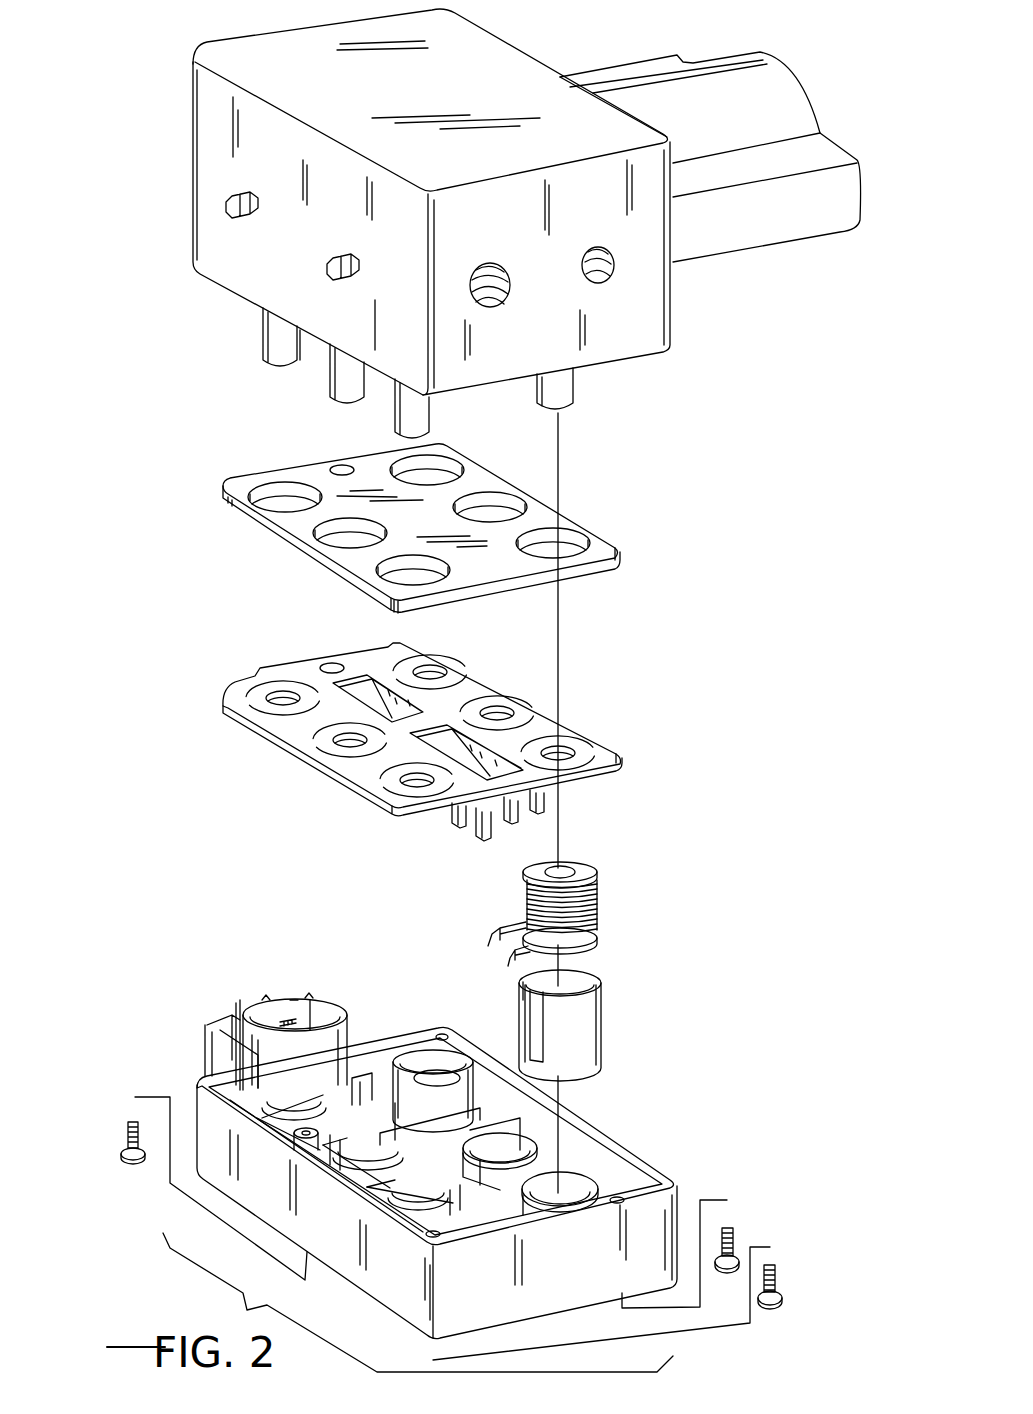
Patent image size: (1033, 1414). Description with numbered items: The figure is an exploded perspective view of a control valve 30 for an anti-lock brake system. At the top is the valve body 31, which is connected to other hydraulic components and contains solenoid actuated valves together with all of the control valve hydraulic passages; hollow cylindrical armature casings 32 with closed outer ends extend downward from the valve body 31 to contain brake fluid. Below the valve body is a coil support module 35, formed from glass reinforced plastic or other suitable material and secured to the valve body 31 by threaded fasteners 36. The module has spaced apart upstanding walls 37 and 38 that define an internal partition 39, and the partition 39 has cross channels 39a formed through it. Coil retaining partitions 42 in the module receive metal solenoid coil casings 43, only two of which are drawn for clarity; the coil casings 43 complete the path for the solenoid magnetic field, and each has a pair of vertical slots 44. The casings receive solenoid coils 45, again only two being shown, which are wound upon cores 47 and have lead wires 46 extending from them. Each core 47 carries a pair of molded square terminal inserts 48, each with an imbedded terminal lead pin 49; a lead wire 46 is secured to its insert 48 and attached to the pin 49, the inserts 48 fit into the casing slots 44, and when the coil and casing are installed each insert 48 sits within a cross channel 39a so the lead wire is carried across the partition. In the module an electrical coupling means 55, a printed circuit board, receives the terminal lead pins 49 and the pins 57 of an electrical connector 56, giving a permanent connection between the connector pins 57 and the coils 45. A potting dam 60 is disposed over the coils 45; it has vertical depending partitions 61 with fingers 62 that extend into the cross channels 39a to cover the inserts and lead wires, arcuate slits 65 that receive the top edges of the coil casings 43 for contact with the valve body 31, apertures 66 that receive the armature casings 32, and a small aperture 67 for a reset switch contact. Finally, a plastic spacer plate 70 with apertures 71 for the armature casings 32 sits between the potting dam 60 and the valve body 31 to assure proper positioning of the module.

The control valve 30 is at (663, 617).
The valve body 31 is at (497, 75).
The armature casings 32 is at (393, 413).
The coil support module 35 is at (660, 1220).
The threaded fasteners 36 is at (130, 1128).
The upstanding wall 37 is at (540, 1163).
The upstanding wall 38 is at (383, 1167).
The partition 39 is at (293, 1103).
The cross channels 39a is at (463, 1180).
The coil retaining partitions 42 is at (545, 1178).
The coil casings 43 is at (461, 1098).
The vertical slots 44 is at (528, 1010).
The solenoid coils 45 is at (598, 904).
The lead wires 46 is at (502, 930).
The cores 47 is at (598, 873).
The terminal inserts 48 is at (522, 930).
The terminal lead pin 49 is at (370, 1037).
The electrical coupling means 55 is at (345, 1127).
The electrical connector 56 is at (240, 1037).
The connector pins 57 is at (310, 1023).
The potting dam 60 is at (615, 755).
The vertical depending partitions 61 is at (465, 820).
The fingers 62 is at (484, 833).
The arcuate slits 65 is at (530, 717).
The apertures 66 is at (340, 742).
The small aperture 67 is at (332, 663).
The spacer plate 70 is at (615, 548).
The apertures 71 is at (497, 513).